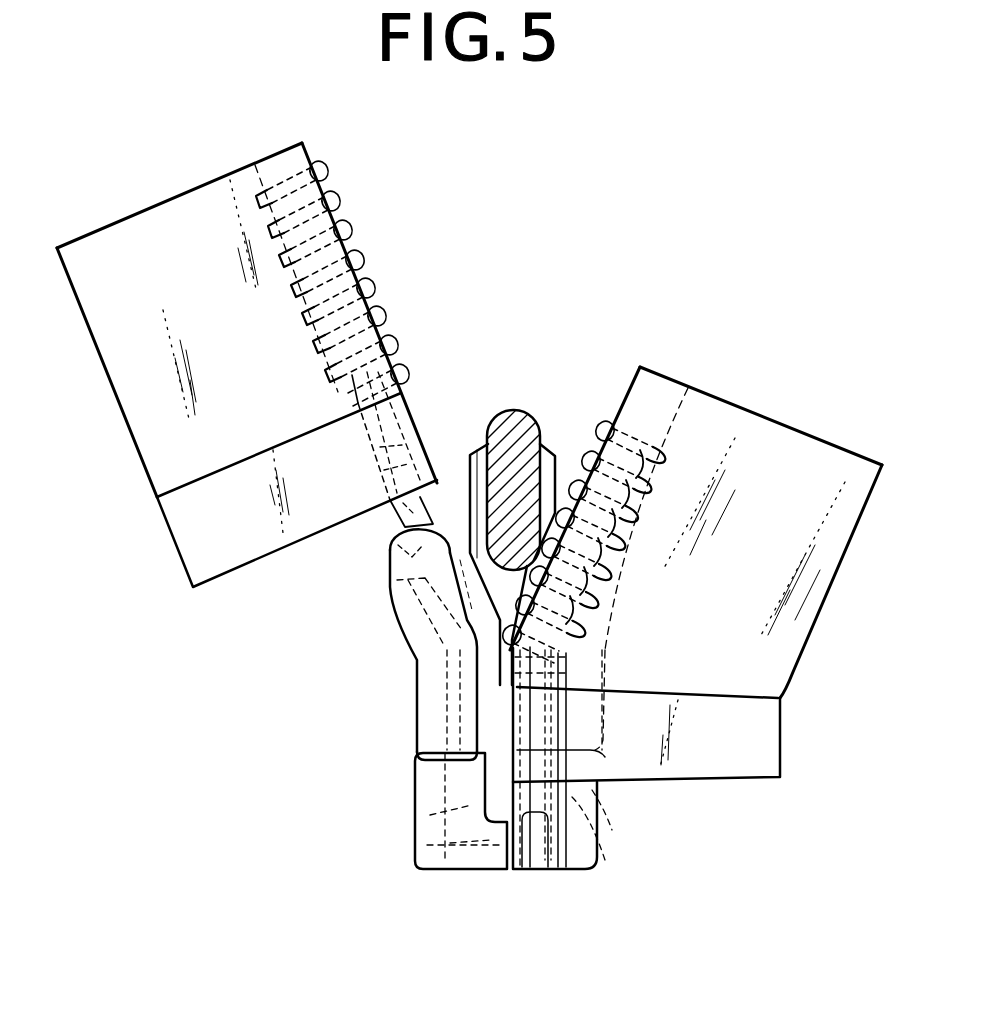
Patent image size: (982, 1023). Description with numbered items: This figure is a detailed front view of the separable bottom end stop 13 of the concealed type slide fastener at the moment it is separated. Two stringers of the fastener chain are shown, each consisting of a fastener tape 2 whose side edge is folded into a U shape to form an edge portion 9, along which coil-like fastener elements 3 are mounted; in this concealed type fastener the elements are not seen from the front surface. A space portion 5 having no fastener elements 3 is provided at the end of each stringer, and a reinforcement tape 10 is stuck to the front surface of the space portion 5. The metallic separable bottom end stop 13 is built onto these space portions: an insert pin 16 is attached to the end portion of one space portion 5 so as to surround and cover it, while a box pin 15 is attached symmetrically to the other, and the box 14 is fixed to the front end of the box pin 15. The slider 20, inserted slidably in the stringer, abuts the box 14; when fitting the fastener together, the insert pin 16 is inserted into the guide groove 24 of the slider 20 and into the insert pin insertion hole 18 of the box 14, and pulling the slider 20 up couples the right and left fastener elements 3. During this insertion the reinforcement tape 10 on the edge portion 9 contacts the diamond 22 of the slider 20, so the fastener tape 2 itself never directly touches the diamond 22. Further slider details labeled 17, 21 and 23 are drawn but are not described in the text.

The fastener tape 2 is at (143, 347).
The fastener elements 3 is at (338, 203).
The space portion 5 is at (233, 477).
The edge portion 9 is at (417, 420).
The reinforcement tape 10 is at (193, 538).
The separable bottom end stop 13 is at (410, 871).
The box 14 is at (457, 857).
The box pin 15 is at (573, 800).
The insert pin 16 is at (398, 530).
The guide post 17 is at (570, 873).
The insert pin insertion hole 18 is at (473, 803).
The slider 20 is at (377, 603).
The box body 21 is at (453, 490).
The diamond 22 is at (513, 443).
The lower portion of pin member 23 is at (488, 690).
The guide groove 24 is at (482, 620).